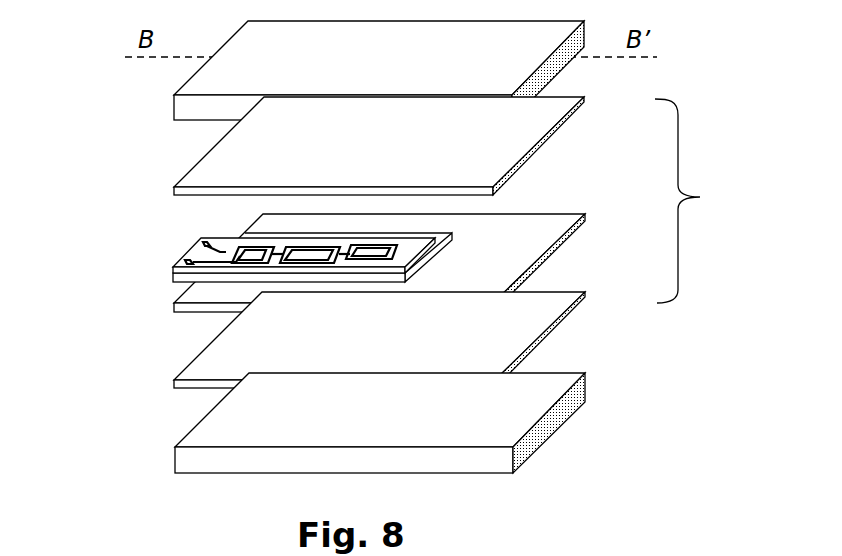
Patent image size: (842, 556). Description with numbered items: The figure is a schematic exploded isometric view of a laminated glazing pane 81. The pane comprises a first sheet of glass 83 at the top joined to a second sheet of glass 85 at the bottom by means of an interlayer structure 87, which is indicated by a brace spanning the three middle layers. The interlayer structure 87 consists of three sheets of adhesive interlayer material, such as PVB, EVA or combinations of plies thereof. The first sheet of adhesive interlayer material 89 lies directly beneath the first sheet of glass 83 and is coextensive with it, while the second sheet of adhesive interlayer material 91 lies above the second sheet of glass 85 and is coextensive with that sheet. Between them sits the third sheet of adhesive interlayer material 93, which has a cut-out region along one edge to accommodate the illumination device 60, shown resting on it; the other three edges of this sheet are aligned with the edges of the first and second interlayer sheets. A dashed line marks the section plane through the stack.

The first sheet of glass 83 is at (210, 78).
The first sheet of adhesive interlayer material 89 is at (227, 166).
The third sheet of adhesive interlayer material 93 is at (535, 227).
The illumination device 60 is at (141, 276).
The second sheet of adhesive interlayer material 91 is at (226, 355).
The second sheet of glass 85 is at (222, 423).
The interlayer structure 87 is at (701, 201).
The laminated glazing pane 81 is at (614, 408).